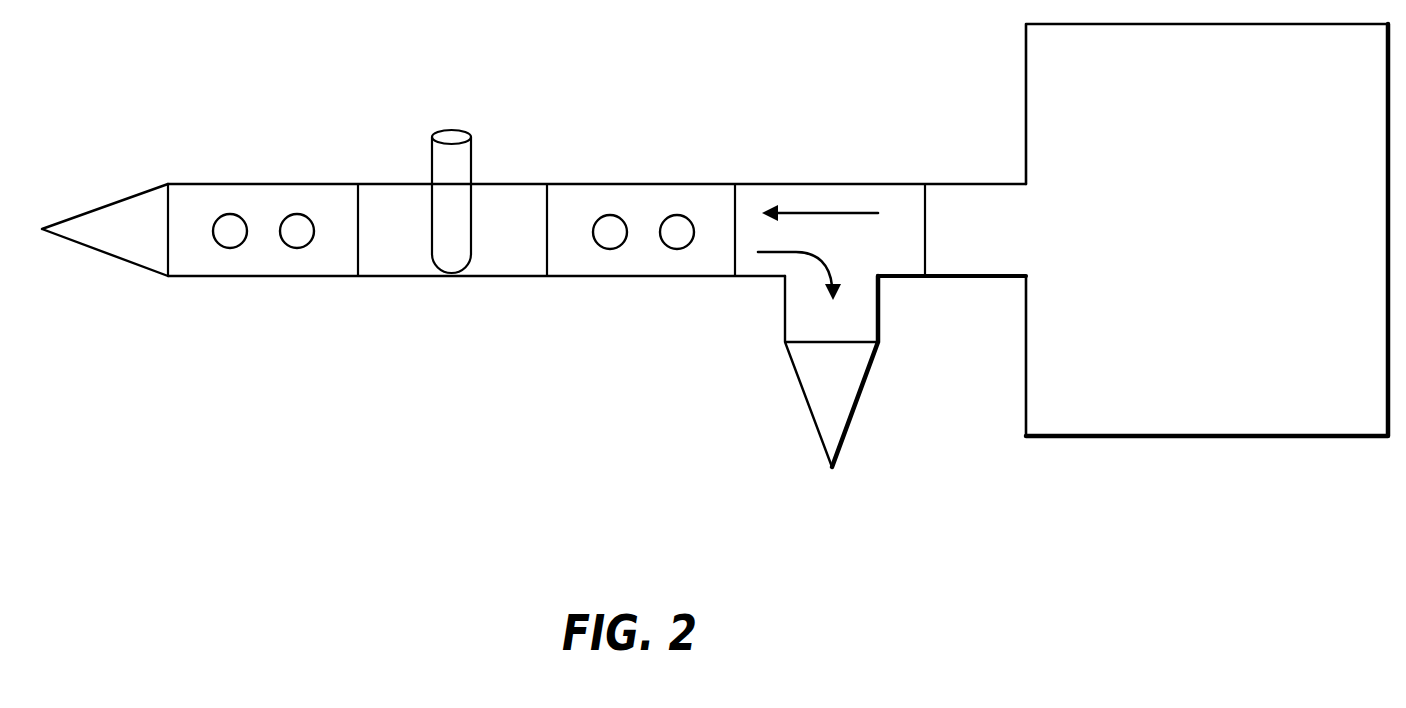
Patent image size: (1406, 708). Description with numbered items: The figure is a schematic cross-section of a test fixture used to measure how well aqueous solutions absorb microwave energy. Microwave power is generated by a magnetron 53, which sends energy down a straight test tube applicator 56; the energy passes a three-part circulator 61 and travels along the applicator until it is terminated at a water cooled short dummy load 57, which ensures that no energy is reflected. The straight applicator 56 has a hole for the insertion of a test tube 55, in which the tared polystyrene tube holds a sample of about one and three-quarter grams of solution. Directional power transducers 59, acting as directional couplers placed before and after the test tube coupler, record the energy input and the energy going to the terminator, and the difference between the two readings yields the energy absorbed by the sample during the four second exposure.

The magnetron 53 is at (1235, 419).
The test tube 55 is at (452, 133).
The test tube applicator 56 is at (507, 195).
The short dummy load 57 is at (112, 237).
The directional power transducer 59 is at (265, 255).
The three-part circulator 61 is at (833, 397).